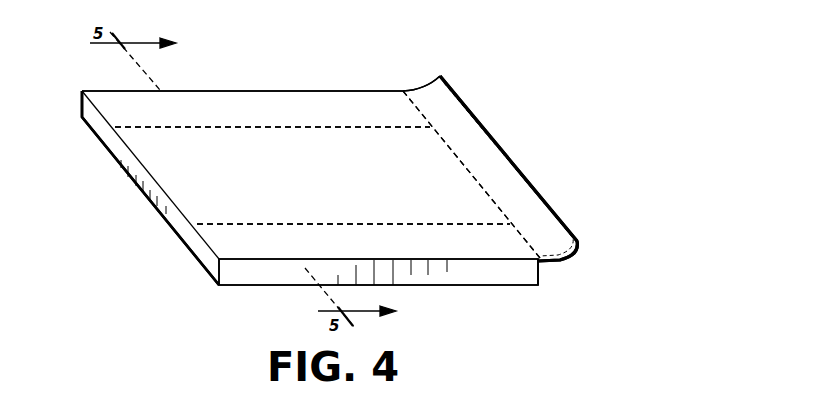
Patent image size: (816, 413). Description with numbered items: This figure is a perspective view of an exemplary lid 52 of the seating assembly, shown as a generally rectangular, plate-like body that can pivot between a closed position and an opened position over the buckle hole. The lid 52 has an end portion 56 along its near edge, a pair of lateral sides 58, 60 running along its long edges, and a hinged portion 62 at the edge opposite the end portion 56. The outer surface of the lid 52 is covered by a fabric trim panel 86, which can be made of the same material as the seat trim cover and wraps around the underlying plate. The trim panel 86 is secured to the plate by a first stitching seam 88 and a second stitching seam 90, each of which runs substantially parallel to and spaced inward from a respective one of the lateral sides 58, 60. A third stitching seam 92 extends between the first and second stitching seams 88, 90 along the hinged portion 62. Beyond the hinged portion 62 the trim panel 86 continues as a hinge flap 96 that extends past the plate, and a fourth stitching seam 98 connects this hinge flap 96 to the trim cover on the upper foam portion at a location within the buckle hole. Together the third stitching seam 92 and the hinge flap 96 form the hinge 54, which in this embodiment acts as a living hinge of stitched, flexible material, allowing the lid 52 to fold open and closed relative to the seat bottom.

The lid 52 is at (556, 139).
The hinge 54 is at (566, 226).
The end portion 56 is at (203, 268).
The lateral side 58 is at (278, 91).
The lateral side 60 is at (468, 273).
The hinged portion 62 is at (540, 278).
The trim panel 86 is at (320, 160).
The first stitching seam 88 is at (258, 222).
The second stitching seam 90 is at (212, 124).
The third stitching seam 92 is at (463, 137).
The hinge flap 96 is at (437, 102).
The fourth stitching seam 98 is at (502, 157).